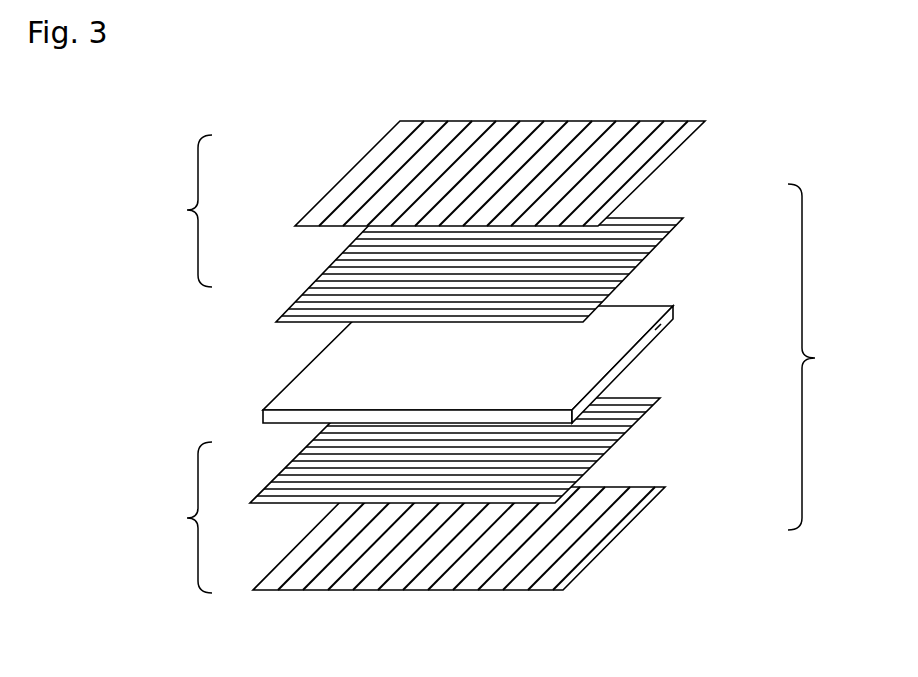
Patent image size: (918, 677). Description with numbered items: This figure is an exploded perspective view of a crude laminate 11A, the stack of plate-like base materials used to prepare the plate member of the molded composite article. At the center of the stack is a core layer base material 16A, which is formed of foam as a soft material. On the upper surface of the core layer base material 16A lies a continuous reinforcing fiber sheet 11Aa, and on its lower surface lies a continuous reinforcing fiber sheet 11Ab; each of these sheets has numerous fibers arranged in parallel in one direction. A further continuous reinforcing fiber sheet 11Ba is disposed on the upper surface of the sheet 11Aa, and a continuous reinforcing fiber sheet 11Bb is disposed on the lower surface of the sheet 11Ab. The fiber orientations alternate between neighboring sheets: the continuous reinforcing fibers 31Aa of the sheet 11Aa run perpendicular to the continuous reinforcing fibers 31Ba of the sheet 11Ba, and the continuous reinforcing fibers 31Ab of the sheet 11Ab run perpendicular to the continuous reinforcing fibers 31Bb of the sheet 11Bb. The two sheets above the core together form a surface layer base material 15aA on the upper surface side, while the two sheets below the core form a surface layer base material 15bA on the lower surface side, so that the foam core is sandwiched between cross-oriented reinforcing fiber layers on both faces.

The crude laminate 11A is at (831, 357).
The surface layer base material 15aA is at (163, 211).
The surface layer base material 15bA is at (163, 517).
The continuous reinforcing fiber sheet 11Ba is at (507, 167).
The continuous reinforcing fibers 31Ba is at (378, 172).
The continuous reinforcing fiber sheet 11Aa is at (476, 284).
The continuous reinforcing fibers 31Aa is at (335, 288).
The core layer base material 16A is at (635, 350).
The continuous reinforcing fiber sheet 11Ab is at (475, 439).
The continuous reinforcing fibers 31Ab is at (300, 478).
The continuous reinforcing fiber sheet 11Bb is at (507, 571).
The continuous reinforcing fibers 31Bb is at (427, 570).